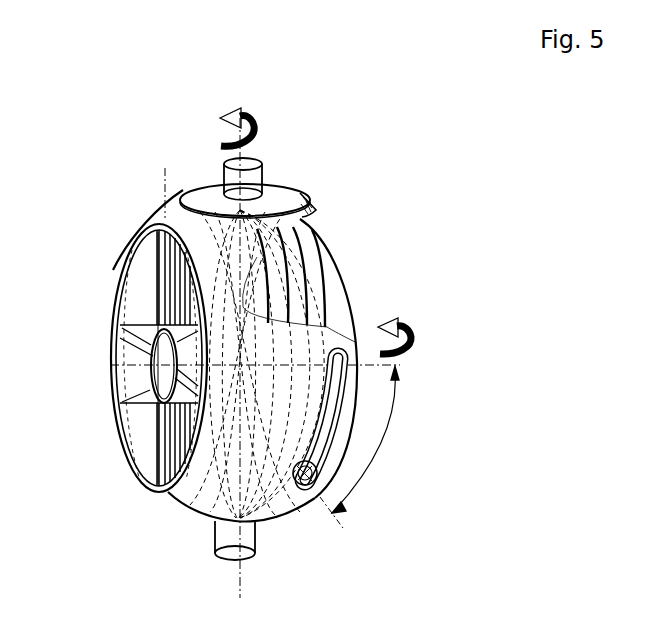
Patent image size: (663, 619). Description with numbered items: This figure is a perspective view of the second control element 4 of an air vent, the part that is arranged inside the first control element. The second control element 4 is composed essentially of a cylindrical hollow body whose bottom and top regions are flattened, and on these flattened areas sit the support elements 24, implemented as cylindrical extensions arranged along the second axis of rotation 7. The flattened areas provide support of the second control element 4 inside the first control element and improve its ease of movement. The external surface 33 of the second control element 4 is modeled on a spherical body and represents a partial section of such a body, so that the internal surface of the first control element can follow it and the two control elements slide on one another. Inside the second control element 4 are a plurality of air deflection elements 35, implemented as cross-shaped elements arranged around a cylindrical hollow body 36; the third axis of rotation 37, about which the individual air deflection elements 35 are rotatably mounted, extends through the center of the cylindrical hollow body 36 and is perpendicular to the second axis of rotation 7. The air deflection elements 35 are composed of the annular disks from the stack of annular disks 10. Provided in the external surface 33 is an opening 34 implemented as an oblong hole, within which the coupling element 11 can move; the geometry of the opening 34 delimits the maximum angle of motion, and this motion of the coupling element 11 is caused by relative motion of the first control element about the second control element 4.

The second control element 4 is at (165, 158).
The second axis of rotation 7 is at (242, 111).
The stack of annular disks 10 is at (323, 278).
The coupling element 11 is at (310, 486).
The support elements 24 is at (267, 161).
The external surface 33 is at (172, 500).
The opening 34 is at (348, 418).
The air deflection elements 35 is at (155, 277).
The cylindrical hollow body 36 is at (150, 381).
The third axis of rotation 37 is at (412, 349).